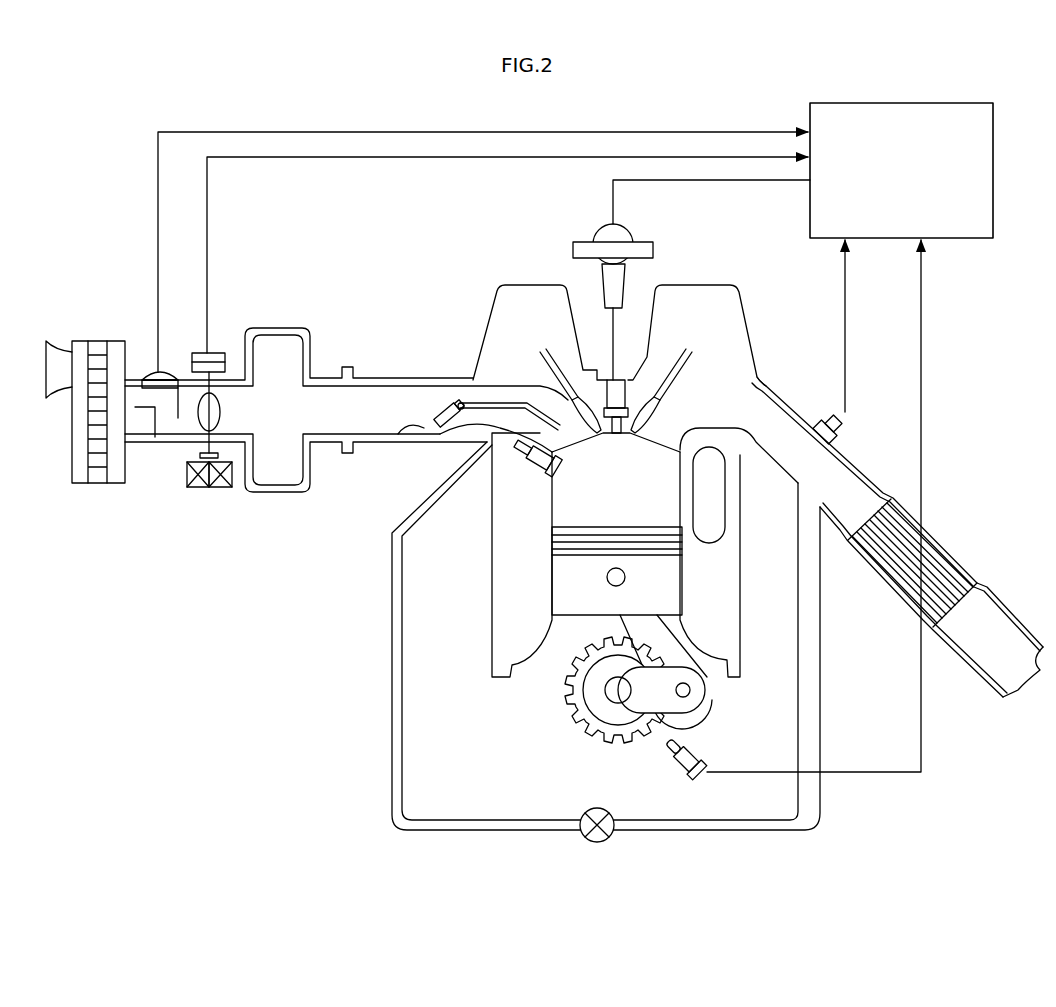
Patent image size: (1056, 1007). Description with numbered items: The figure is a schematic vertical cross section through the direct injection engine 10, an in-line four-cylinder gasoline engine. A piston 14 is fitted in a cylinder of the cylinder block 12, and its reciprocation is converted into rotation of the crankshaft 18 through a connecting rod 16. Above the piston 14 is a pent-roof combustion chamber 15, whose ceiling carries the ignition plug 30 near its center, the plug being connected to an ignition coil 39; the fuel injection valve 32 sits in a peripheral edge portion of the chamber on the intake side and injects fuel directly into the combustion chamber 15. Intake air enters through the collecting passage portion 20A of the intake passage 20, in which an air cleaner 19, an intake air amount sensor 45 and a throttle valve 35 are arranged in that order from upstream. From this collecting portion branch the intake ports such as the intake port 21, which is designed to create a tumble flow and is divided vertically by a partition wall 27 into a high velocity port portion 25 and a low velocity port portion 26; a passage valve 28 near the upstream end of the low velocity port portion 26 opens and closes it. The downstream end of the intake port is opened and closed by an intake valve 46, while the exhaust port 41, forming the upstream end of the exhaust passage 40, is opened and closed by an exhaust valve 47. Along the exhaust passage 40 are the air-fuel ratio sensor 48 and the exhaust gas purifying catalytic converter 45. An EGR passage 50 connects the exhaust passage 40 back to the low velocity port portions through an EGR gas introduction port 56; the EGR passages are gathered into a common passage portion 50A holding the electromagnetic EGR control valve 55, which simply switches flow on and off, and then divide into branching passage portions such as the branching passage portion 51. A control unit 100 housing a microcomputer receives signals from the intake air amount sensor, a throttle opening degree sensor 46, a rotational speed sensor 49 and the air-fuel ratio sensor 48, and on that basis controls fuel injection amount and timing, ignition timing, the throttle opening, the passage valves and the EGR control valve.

The direct injection engine 10 is at (430, 262).
The cylinder block 12 is at (490, 555).
The piston 14 is at (560, 595).
The combustion chamber 15 is at (690, 508).
The connecting rod 16 is at (672, 660).
The crankshaft 18 is at (612, 695).
The air cleaner 19 is at (76, 483).
The intake passage 20 is at (280, 472).
The collecting passage portion 20A is at (283, 340).
The intake port 21 is at (378, 380).
The high velocity port portion 25 is at (507, 397).
The low velocity port portion 26 is at (483, 426).
The partition wall 27 is at (457, 402).
The passage valve 28 is at (410, 432).
The ignition plug 30 is at (630, 390).
The fuel injection valve 32 is at (540, 472).
The throttle valve 35 is at (200, 418).
The ignition coil 39 is at (590, 238).
The exhaust passage 40 is at (830, 476).
The exhaust port 41 is at (762, 400).
The intake air amount sensor / exhaust gas purifying catalytic converter 45 is at (165, 372).
The intake valve / throttle opening degree sensor 46 is at (215, 353).
The exhaust valve 47 is at (683, 376).
The air-fuel ratio sensor 48 is at (842, 420).
The rotational speed sensor 49 is at (668, 755).
The EGR passage 50 is at (722, 834).
The common passage portion 50A is at (821, 700).
The branching passage portion 51 is at (395, 625).
The EGR control valve 55 is at (597, 842).
The EGR gas introduction port 56 is at (482, 453).
The control unit 100 is at (858, 104).